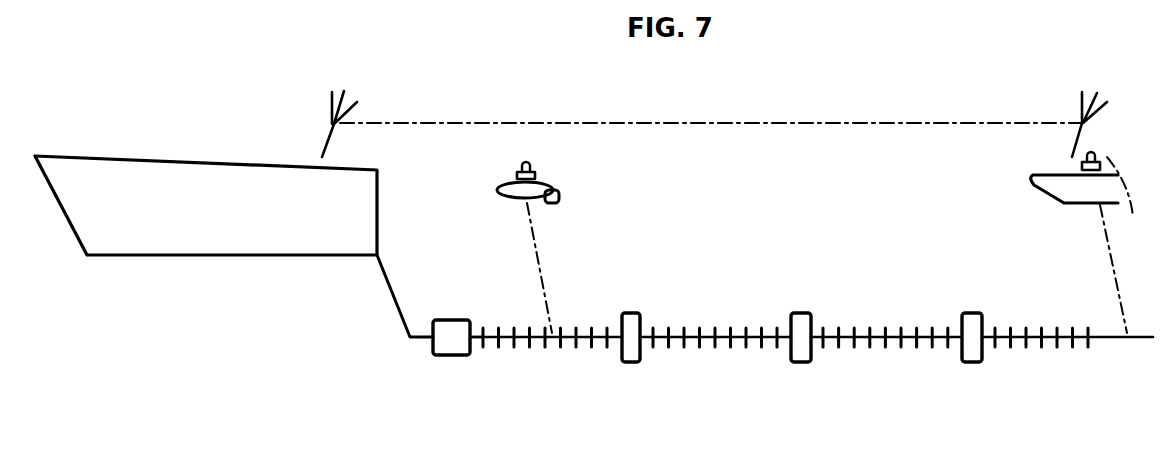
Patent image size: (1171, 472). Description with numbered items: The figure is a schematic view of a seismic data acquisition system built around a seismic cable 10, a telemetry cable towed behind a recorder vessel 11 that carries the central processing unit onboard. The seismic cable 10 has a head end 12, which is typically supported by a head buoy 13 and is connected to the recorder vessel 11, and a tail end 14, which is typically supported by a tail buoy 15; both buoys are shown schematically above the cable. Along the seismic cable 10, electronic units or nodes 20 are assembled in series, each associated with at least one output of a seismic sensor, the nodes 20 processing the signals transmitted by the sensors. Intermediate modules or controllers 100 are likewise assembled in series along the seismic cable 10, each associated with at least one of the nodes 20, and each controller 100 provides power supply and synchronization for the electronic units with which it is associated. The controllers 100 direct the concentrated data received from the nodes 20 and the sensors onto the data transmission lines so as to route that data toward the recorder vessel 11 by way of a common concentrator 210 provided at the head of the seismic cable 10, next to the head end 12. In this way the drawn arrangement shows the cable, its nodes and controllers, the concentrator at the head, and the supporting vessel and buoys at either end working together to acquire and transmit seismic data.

The seismic cable 10 is at (707, 401).
The recorder vessel 11 is at (235, 237).
The head end 12 is at (475, 342).
The head buoy 13 is at (510, 190).
The tail end 14 is at (1108, 340).
The tail buoy 15 is at (1083, 190).
The nodes 20 is at (514, 363).
The controllers 100 is at (630, 350).
The common concentrator 210 is at (452, 343).